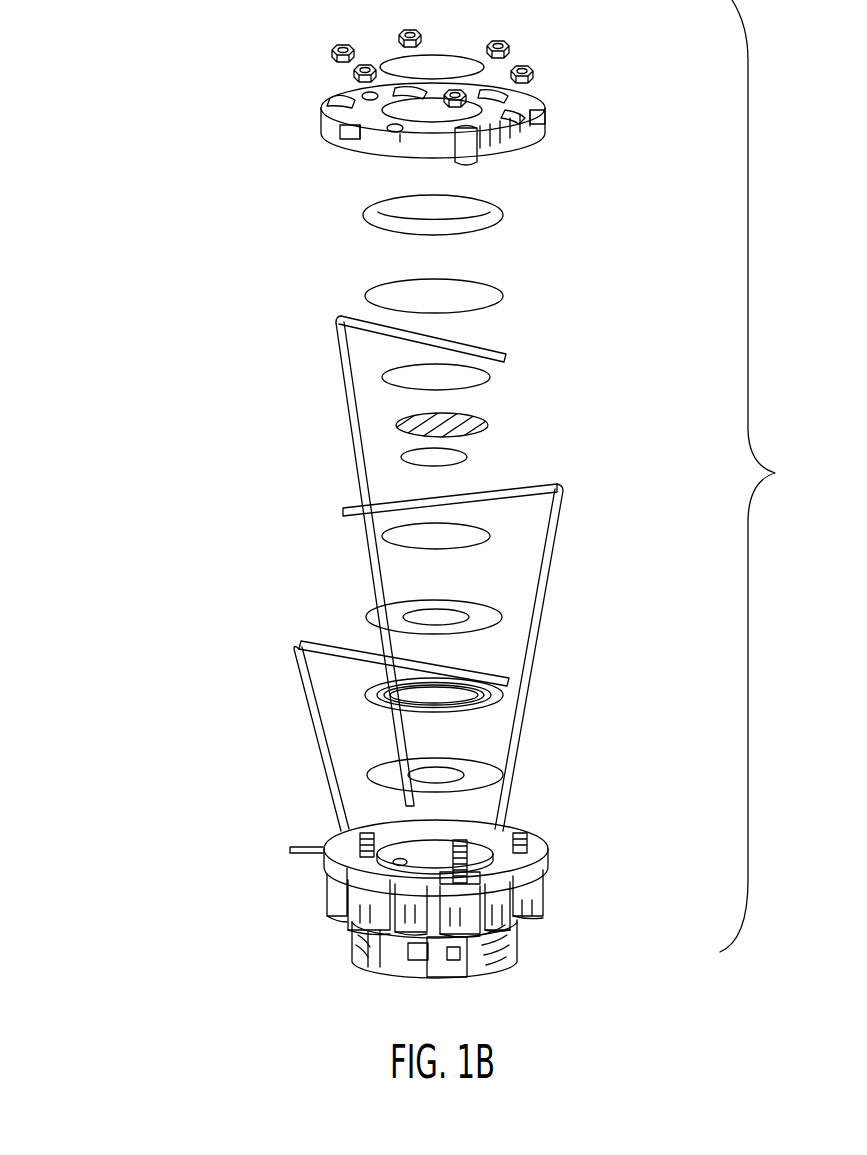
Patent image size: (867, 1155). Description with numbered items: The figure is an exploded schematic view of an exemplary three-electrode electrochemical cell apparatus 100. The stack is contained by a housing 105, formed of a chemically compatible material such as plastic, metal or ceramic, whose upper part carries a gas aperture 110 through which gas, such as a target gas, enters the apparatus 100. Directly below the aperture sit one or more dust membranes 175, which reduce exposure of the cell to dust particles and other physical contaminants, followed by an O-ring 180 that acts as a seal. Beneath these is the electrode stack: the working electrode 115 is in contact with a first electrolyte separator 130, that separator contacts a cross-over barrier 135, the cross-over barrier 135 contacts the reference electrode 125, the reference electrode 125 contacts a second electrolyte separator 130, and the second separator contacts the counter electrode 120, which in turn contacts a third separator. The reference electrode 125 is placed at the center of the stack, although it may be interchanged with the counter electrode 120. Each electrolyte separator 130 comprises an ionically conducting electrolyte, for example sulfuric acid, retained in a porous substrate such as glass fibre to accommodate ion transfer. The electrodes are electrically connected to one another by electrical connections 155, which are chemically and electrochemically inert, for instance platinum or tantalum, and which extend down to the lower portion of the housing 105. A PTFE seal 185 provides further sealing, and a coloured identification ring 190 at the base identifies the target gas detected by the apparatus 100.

The electrochemical cell apparatus 100 is at (210, 120).
The housing 105 is at (535, 133).
The gas aperture 110 is at (533, 110).
The working electrode 115 is at (503, 295).
The counter electrode 120 is at (500, 617).
The reference electrode 125 is at (490, 455).
The electrolyte separator 130 is at (500, 373).
The cross-over barrier 135 is at (495, 418).
The electrical connection 155 is at (337, 422).
The dust membrane 175 is at (500, 64).
The O-ring 180 is at (503, 217).
The PTFE seal 185 is at (500, 777).
The coloured identification ring 190 is at (507, 953).